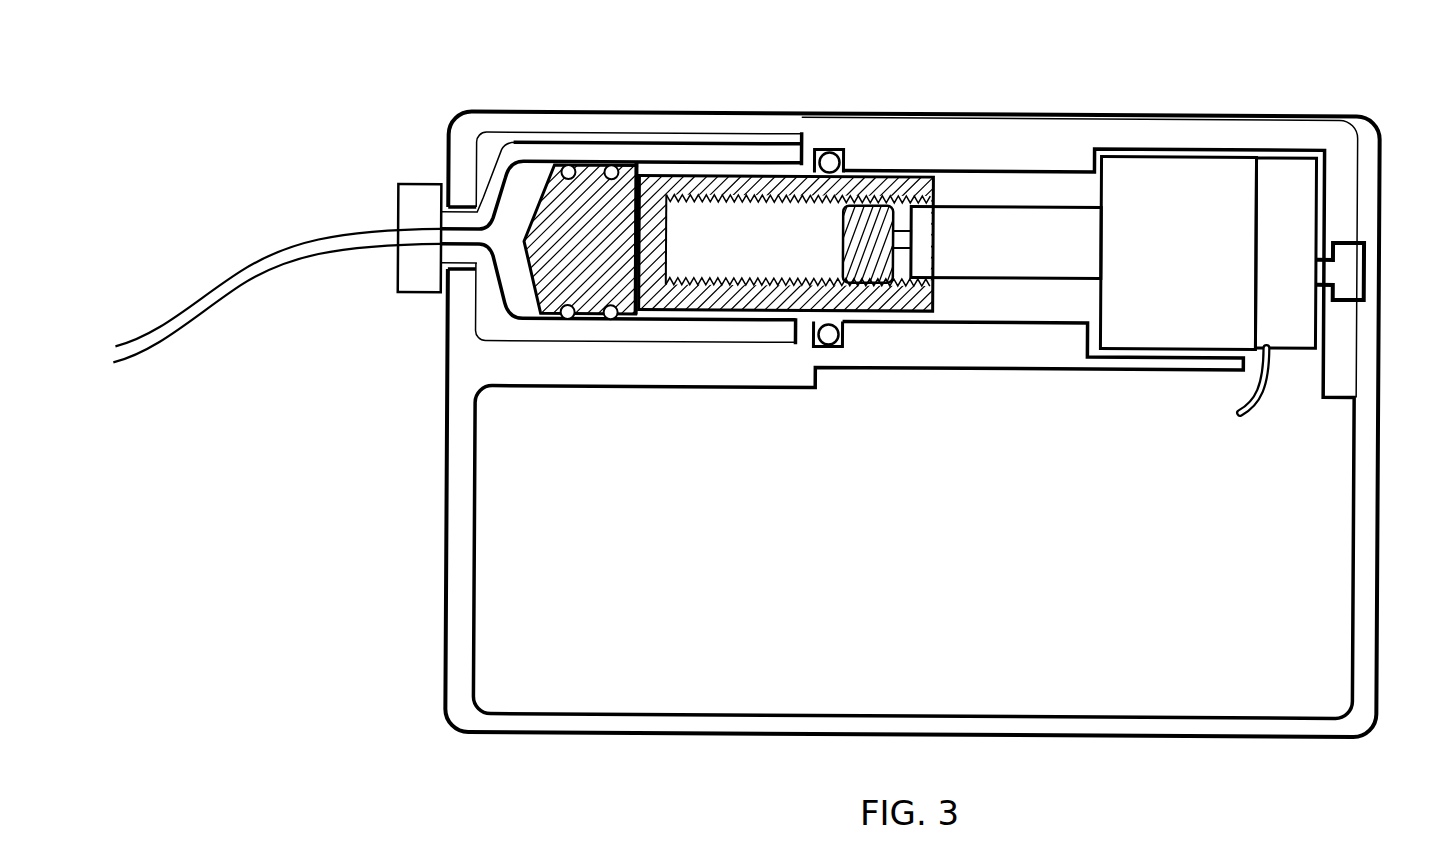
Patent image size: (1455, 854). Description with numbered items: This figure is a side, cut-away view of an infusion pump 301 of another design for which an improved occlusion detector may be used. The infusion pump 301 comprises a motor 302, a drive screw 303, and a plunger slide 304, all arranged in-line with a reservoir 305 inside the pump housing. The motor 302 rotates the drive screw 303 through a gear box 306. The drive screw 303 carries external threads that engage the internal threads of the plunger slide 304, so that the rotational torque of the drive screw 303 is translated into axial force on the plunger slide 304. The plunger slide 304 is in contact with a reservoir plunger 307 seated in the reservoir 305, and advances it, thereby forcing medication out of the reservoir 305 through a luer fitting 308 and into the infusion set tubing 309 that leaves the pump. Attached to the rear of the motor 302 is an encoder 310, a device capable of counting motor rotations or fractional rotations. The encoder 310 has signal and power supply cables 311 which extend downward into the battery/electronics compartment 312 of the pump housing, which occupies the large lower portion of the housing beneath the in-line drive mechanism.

The infusion pump 301 is at (413, 496).
The motor 302 is at (1187, 180).
The drive screw 303 is at (873, 216).
The plunger slide 304 is at (663, 186).
The reservoir 305 is at (522, 151).
The gear box 306 is at (977, 200).
The reservoir plunger 307 is at (594, 195).
The luer fitting 308 is at (420, 206).
The infusion set tubing 309 is at (250, 276).
The encoder 310 is at (1292, 178).
The signal and power supply cables 311 is at (1253, 410).
The battery/electronics compartment 312 is at (914, 431).